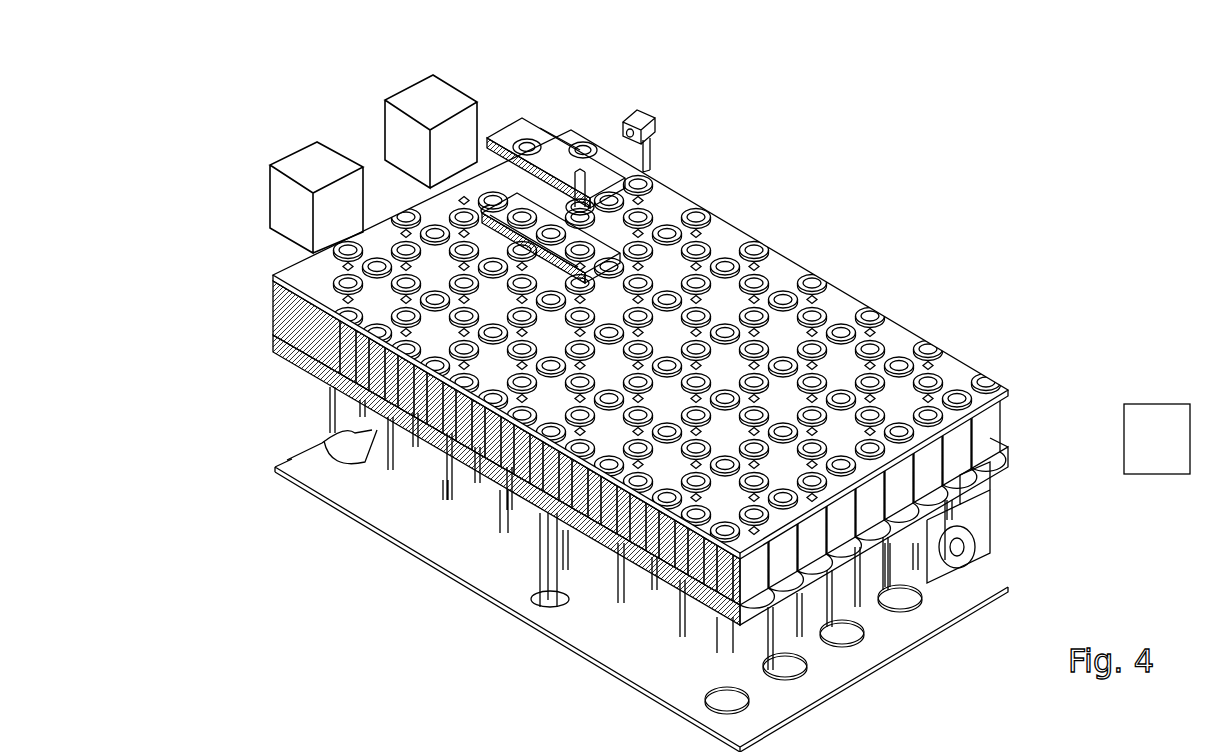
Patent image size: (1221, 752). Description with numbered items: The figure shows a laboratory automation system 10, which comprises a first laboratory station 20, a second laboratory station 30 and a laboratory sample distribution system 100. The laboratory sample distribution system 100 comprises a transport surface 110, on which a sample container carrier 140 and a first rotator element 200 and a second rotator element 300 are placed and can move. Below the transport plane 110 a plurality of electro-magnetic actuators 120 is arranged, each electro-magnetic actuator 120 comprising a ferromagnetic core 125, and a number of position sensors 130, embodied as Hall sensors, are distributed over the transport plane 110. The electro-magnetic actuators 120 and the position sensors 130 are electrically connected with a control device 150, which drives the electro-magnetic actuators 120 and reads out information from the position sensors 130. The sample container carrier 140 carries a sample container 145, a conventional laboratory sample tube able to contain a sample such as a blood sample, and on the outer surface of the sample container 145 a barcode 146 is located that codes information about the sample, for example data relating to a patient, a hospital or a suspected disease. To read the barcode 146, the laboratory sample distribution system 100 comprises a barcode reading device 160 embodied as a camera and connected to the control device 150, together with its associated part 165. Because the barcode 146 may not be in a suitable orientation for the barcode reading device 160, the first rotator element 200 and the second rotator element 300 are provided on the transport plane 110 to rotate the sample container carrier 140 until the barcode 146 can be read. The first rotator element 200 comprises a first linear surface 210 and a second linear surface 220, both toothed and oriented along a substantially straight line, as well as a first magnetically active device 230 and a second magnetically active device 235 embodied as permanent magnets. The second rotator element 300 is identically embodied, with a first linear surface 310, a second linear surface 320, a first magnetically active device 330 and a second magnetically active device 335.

The laboratory automation system 10 is at (434, 646).
The first laboratory station 20 is at (298, 153).
The second laboratory station 30 is at (412, 92).
The laboratory sample distribution system 100 is at (365, 565).
The transport surface 110 is at (898, 326).
The electro-magnetic actuators 120 is at (712, 565).
The ferromagnetic core 125 is at (722, 558).
The position sensors 130 is at (755, 303).
The sample container carrier 140 is at (575, 240).
The sample container 145 is at (580, 168).
The barcode 146 is at (590, 205).
The control device 150 is at (1173, 454).
The barcode reading device 160 is at (638, 101).
The sensor lead 165 is at (614, 142).
The first rotator element 200 is at (472, 253).
The first linear surface 210 is at (697, 218).
The second linear surface 220 is at (575, 279).
The first magnetically active device 230 is at (570, 284).
The second magnetically active device 235 is at (488, 217).
The second rotator element 300 is at (581, 117).
The first linear surface 310 is at (508, 146).
The second linear surface 320 is at (598, 160).
The first magnetically active device 330 is at (598, 180).
The second magnetically active device 335 is at (526, 140).